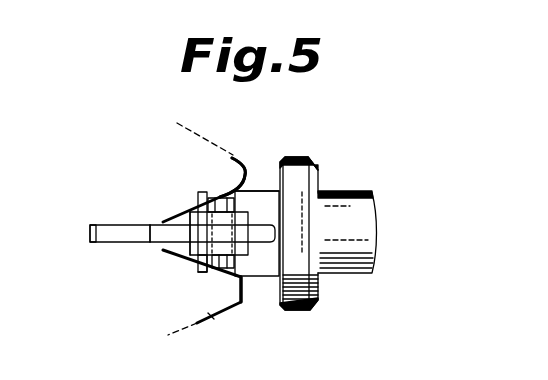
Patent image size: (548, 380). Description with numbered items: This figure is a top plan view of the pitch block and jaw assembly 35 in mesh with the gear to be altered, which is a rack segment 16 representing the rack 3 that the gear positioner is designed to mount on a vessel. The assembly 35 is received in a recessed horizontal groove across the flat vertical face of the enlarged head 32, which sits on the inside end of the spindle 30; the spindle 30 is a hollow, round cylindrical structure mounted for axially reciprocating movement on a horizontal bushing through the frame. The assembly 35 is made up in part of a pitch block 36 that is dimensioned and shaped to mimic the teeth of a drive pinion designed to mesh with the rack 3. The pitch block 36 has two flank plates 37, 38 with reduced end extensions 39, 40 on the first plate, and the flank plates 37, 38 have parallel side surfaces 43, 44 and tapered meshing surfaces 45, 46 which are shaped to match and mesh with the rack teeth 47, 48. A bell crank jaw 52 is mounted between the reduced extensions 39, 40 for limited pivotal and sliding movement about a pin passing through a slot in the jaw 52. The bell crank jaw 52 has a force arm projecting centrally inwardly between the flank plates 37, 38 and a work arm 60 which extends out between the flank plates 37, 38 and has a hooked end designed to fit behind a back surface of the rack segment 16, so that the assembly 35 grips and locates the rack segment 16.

The rack 3 is at (197, 326).
The rack segment 16 is at (236, 308).
The spindle 30 is at (371, 199).
The enlarged head 32 is at (313, 155).
The pitch block and jaw assembly 35 is at (186, 245).
The pitch block 36 is at (266, 191).
The flank plate 37 is at (274, 276).
The flank plate 38 is at (311, 170).
The reduced end extension 39 is at (190, 212).
The reduced end extension 40 is at (188, 254).
The parallel side surface 43 is at (205, 274).
The parallel side surface 44 is at (247, 190).
The tapered meshing surface 45 is at (226, 270).
The tapered meshing surface 46 is at (207, 192).
The rack tooth 47 is at (213, 322).
The rack tooth 48 is at (232, 158).
The bell crank jaw 52 is at (88, 240).
The work arm 60 is at (104, 236).